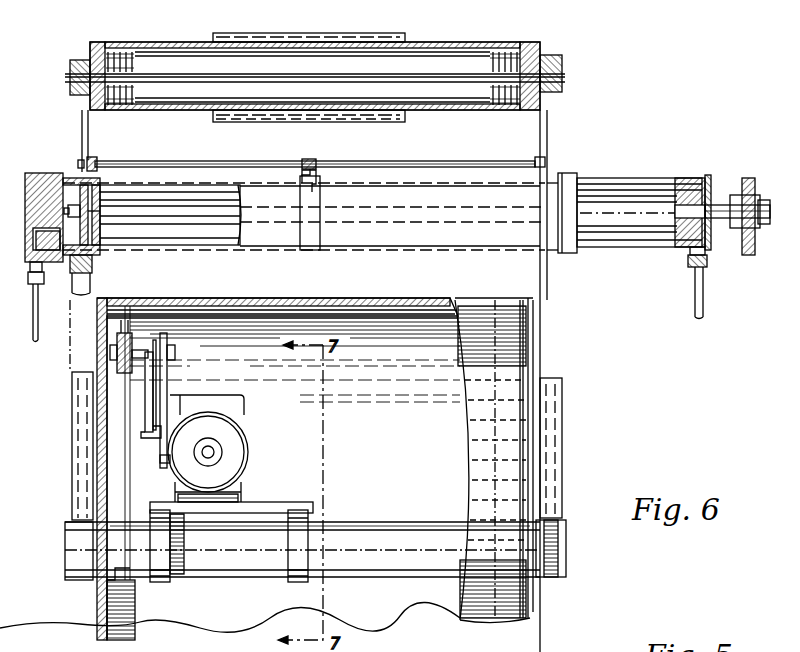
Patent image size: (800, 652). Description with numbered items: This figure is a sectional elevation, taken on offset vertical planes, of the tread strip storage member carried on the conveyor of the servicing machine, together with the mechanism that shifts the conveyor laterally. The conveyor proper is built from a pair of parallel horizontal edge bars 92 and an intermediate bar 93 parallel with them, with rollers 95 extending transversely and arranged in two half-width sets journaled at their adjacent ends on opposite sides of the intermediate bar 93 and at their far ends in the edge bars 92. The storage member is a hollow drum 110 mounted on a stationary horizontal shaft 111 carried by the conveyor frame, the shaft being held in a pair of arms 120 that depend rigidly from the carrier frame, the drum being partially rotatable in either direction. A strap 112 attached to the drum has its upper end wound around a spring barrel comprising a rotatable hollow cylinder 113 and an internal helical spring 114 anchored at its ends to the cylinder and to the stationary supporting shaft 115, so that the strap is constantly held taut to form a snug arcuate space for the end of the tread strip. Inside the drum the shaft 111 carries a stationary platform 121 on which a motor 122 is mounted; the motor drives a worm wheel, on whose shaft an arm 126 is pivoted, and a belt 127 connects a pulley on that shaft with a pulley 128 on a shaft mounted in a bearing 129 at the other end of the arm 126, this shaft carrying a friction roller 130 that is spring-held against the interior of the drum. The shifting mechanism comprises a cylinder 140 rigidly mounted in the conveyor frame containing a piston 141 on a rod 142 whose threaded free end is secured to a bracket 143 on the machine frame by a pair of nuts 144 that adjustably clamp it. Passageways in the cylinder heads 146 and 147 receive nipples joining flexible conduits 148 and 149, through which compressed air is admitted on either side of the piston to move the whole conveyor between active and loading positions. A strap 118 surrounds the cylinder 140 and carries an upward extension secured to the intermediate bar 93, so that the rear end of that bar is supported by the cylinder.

The horizontal bars 92 is at (93, 163).
The intermediate bar 93 is at (308, 162).
The rollers 95 is at (208, 165).
The drum 110 is at (426, 302).
The shaft 111 is at (410, 526).
The strap 112 is at (402, 18).
The hollow cylinder 113 is at (470, 42).
The helical spring 114 is at (492, 60).
The supporting shaft 115 is at (409, 71).
The strap 118 is at (300, 233).
The arms 120 is at (78, 405).
The platform 121 is at (286, 502).
The motor 122 is at (250, 446).
The arm 126 is at (148, 408).
The belt 127 is at (186, 393).
The pulley 128 is at (185, 338).
The bearing 129 is at (145, 350).
The friction roller 130 is at (126, 330).
The cylinder 140 is at (630, 168).
The piston 141 is at (100, 231).
The rod 142 is at (186, 225).
The bracket 143 is at (745, 255).
The nuts 144 is at (746, 194).
The head 146 is at (37, 172).
The head 147 is at (692, 178).
The flexible conduit 148 is at (32, 340).
The flexible conduit 149 is at (694, 293).